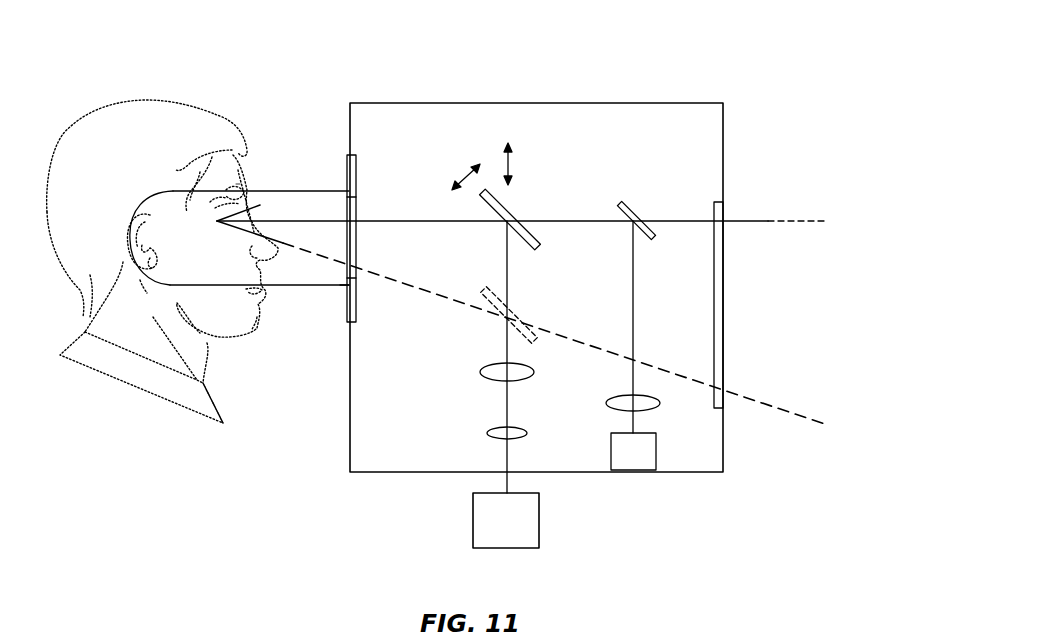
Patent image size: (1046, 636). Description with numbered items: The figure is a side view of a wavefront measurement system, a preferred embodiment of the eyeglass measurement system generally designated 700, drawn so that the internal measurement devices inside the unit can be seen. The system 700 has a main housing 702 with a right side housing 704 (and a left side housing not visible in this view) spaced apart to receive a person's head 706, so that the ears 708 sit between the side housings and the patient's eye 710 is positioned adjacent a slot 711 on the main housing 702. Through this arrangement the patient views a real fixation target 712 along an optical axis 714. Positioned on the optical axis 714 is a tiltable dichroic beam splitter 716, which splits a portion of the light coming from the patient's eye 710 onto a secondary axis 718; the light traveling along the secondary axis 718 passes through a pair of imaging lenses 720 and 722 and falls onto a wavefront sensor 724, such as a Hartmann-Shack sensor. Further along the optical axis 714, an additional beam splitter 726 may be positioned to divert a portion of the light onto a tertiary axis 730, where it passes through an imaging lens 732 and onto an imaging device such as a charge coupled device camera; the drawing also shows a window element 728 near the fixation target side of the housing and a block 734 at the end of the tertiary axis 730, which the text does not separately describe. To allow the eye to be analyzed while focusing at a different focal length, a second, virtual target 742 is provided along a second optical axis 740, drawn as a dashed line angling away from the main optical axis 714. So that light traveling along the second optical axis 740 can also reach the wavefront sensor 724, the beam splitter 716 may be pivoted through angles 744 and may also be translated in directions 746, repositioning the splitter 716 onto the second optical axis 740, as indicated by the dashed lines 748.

The eyeglass measurement system 700 is at (741, 41).
The main housing 702 is at (605, 103).
The right side housing 704 is at (312, 190).
The person's head 706 is at (112, 118).
The ears 708 is at (148, 258).
The eye 710 is at (238, 180).
The slot 711 is at (346, 273).
The real fixation target 712 is at (851, 196).
The optical axis 714 is at (394, 220).
The tiltable dichroic beam splitter 716 is at (505, 208).
The secondary axis 718 is at (505, 341).
The imaging lens 720 is at (485, 372).
The imaging lens 722 is at (487, 434).
The wavefront sensor 724 is at (473, 520).
The additional beam splitter 726 is at (633, 211).
The exit window 728 is at (726, 207).
The tertiary axis 730 is at (635, 278).
The imaging lens 732 is at (610, 405).
The sensor 734 is at (610, 442).
The second optical axis 740 is at (400, 282).
The virtual target 742 is at (851, 414).
The angles 744 is at (466, 170).
The directions 746 is at (510, 161).
The dashed lines 748 is at (517, 300).